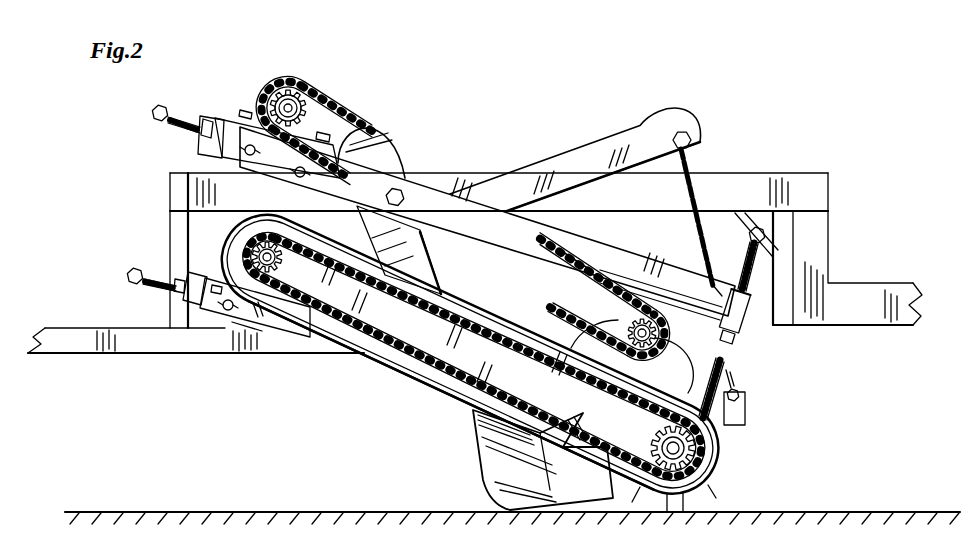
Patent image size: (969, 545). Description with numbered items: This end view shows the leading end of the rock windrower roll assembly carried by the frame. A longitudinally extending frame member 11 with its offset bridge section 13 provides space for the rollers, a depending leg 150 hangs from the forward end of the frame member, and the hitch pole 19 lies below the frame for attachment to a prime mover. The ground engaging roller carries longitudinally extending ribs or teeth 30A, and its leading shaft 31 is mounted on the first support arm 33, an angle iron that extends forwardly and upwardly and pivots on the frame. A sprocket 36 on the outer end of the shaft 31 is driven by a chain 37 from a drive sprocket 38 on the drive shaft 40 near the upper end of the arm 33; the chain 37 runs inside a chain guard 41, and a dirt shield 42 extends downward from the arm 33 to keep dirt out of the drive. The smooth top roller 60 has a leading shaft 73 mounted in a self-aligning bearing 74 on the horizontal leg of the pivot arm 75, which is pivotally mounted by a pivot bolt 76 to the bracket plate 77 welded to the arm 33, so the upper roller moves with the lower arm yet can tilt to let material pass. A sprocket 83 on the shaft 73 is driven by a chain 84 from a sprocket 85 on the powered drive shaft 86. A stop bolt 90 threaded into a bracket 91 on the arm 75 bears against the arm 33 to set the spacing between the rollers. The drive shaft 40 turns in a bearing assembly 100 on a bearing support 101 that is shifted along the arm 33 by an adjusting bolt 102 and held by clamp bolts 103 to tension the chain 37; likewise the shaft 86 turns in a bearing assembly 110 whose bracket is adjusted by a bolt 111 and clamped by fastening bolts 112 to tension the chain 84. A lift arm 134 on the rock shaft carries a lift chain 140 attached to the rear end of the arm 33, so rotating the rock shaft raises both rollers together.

The frame member 11 is at (855, 288).
The offset bridge section 13 is at (730, 180).
The hitch pole 19 is at (92, 345).
The ribs or teeth 30A is at (727, 492).
The shaft 31 is at (713, 465).
The first support arm 33 is at (745, 413).
The sprocket 36 is at (690, 442).
The chain 37 is at (460, 397).
The drive sprocket 38 is at (283, 266).
The drive shaft 40 is at (260, 252).
The chain guard 41 is at (447, 297).
The dirt shield 42 is at (497, 472).
The top roller 60 is at (570, 348).
The shaft 73 is at (585, 372).
The bearing 74 is at (600, 290).
The pivot arm 75 is at (580, 243).
The pivot bolt 76 is at (400, 192).
The bracket plate 77 is at (373, 137).
The sprocket 83 is at (620, 320).
The chain 84 is at (332, 99).
The sprocket 85 is at (289, 102).
The drive shaft 86 is at (278, 101).
The stop bolt 90 is at (765, 258).
The bracket 91 is at (733, 342).
The bearing assembly 100 is at (205, 272).
The bearing support 101 is at (185, 317).
The adjusting bolt 102 is at (147, 285).
The clamp bolts 103 is at (230, 325).
The bearing assembly 110 is at (242, 120).
The bolt 111 is at (188, 128).
The fastening bolts 112 is at (301, 176).
The lift arm 134 is at (587, 150).
The lift chain 140 is at (693, 157).
The depending leg 150 is at (197, 219).